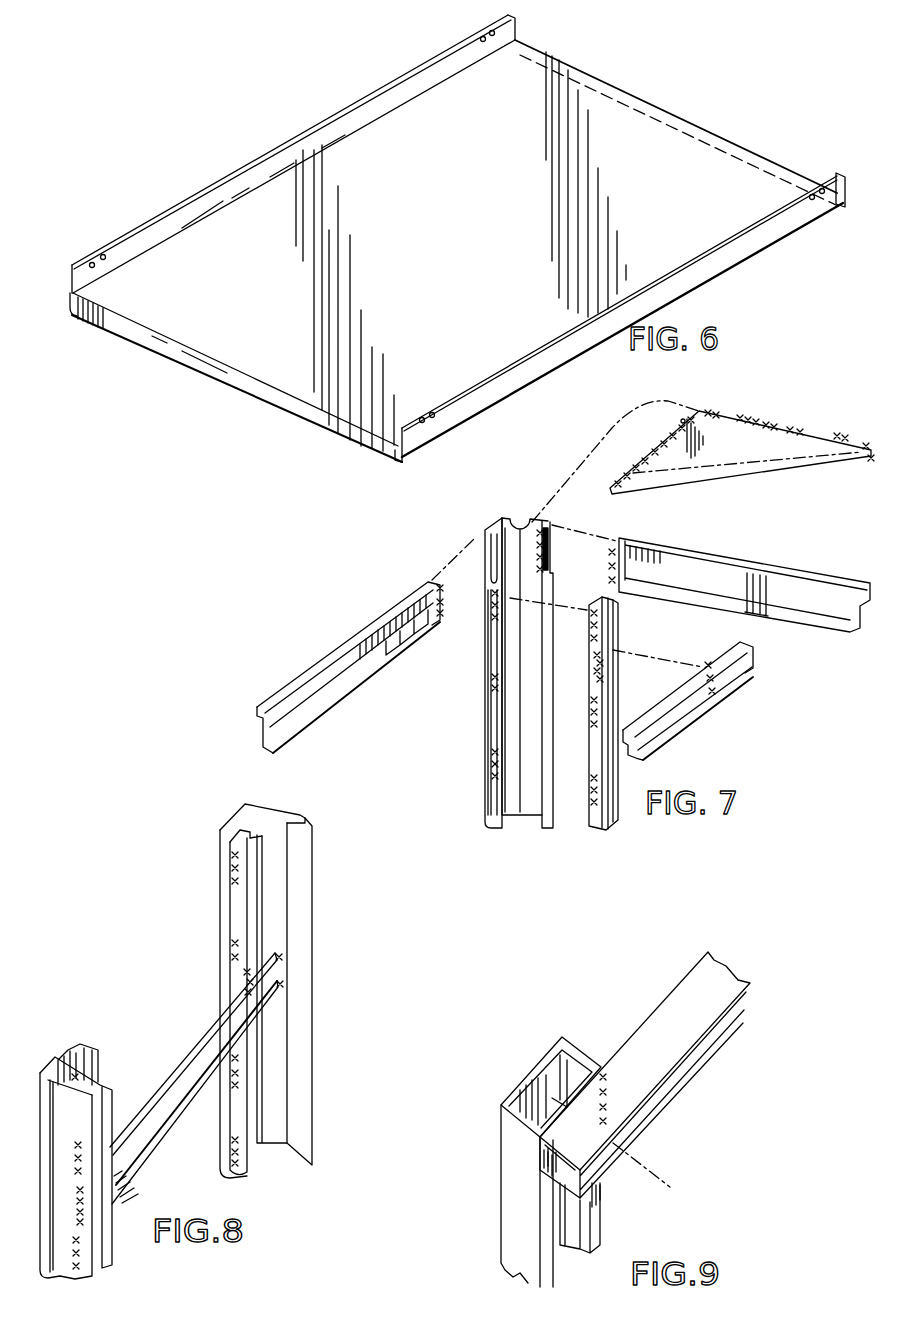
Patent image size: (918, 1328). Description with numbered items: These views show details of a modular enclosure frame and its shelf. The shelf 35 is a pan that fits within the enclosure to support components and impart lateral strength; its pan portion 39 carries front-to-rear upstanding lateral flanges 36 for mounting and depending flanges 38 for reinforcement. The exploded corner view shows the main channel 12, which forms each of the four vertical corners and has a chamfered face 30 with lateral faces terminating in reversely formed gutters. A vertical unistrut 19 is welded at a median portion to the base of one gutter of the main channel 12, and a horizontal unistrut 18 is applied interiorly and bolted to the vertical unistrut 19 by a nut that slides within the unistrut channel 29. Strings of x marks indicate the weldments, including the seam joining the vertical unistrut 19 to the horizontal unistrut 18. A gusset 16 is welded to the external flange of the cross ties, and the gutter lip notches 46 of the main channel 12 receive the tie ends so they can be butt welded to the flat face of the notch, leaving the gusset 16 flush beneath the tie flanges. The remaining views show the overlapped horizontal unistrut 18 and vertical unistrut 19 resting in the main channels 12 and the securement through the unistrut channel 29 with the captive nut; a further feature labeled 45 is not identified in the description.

In FIG. 7, the main channel 12 is at (485, 741).
In FIG. 8, the main channel 12 is at (312, 926).
In FIG. 7, the gusset 16 is at (784, 427).
In FIG. 7, the horizontal unistrut 18 is at (680, 733).
In FIG. 7, the vertical unistrut 19 is at (586, 811).
In FIG. 9, the unistrut channel 29 is at (537, 1092).
In FIG. 8, the chamfered face 30 is at (240, 804).
In FIG. 6, the shelf 35 is at (683, 118).
In FIG. 6, the upstanding lateral flanges 36 is at (331, 119).
In FIG. 6, the depending flanges 38 is at (264, 407).
In FIG. 6, the pan portion 39 is at (468, 283).
In FIG. 7, the post slot strip 45 is at (485, 652).
In FIG. 7, the gutter lip notches 46 is at (489, 580).